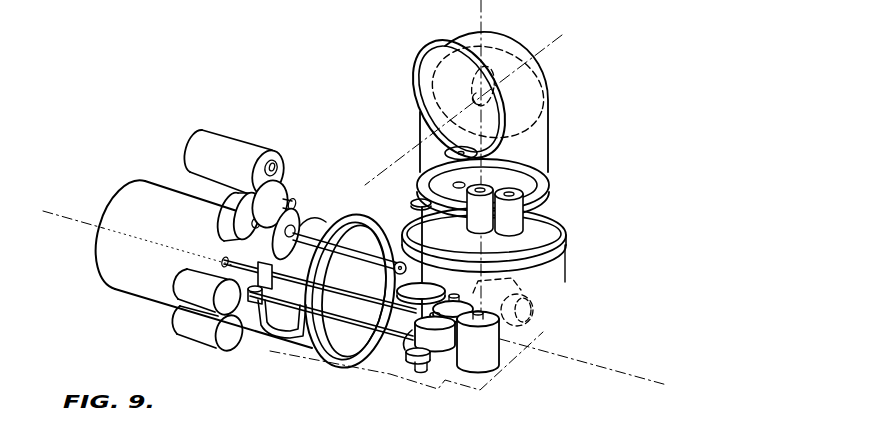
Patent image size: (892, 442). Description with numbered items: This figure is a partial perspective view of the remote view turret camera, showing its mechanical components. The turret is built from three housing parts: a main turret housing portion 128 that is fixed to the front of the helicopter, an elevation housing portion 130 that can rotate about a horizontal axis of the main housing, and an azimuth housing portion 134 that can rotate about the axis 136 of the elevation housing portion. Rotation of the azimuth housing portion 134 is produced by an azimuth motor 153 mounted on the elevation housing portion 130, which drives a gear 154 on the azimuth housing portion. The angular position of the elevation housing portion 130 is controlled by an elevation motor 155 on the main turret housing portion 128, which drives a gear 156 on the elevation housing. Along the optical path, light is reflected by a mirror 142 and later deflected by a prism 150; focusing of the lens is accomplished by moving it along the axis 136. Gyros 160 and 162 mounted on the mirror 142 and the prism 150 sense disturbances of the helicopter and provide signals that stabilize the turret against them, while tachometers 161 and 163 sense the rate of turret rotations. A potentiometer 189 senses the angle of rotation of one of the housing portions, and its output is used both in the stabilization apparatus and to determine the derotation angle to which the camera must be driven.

The main turret housing portion 128 is at (282, 353).
The elevation housing portion 130 is at (543, 331).
The azimuth housing portion 134 is at (505, 59).
The axis 136 is at (482, 18).
The mirror 142 is at (543, 127).
The prism 150 is at (523, 288).
The azimuth motor 153 is at (485, 350).
The gear 154 is at (549, 192).
The elevation motor 155 is at (238, 143).
The gear 156 is at (328, 367).
The gyro 160 is at (508, 85).
The tachometer 161 is at (495, 228).
The gyro 162 is at (547, 308).
The tachometer 163 is at (227, 345).
The potentiometer 189 is at (463, 223).